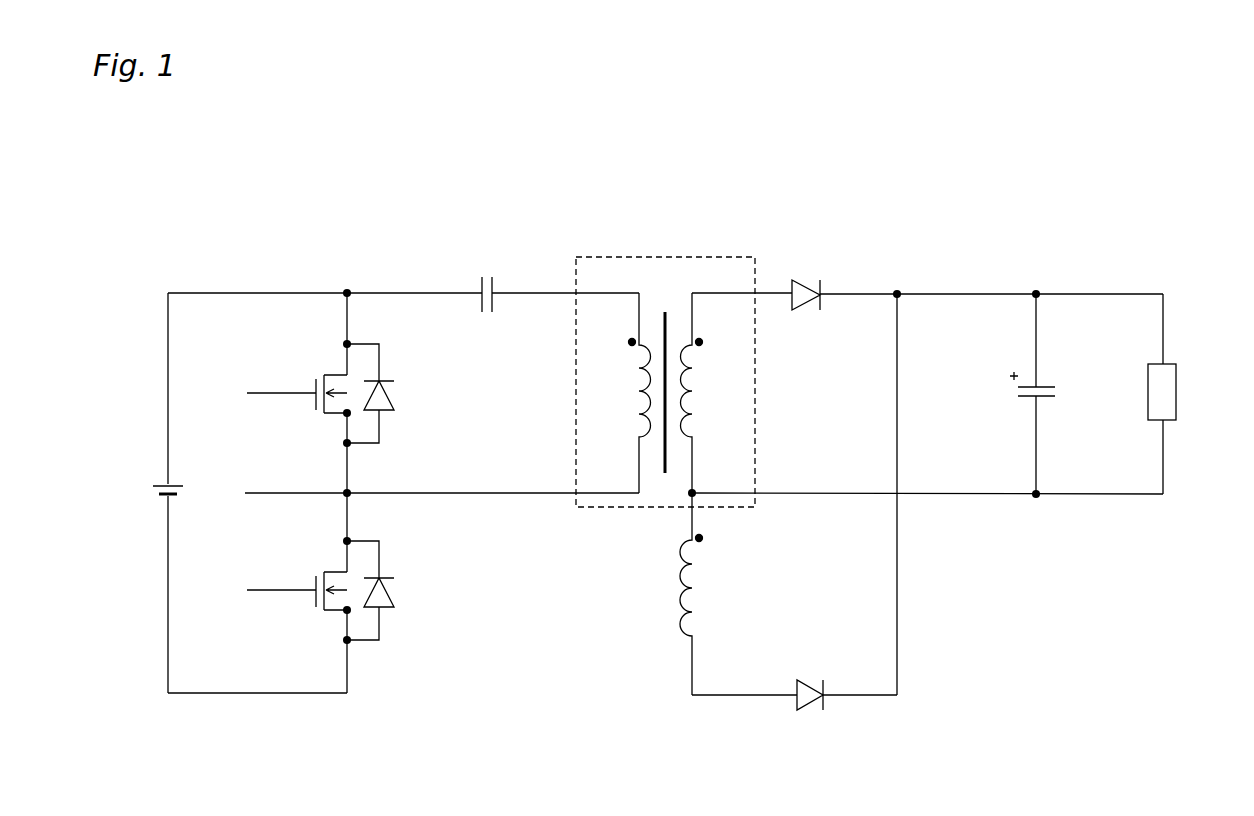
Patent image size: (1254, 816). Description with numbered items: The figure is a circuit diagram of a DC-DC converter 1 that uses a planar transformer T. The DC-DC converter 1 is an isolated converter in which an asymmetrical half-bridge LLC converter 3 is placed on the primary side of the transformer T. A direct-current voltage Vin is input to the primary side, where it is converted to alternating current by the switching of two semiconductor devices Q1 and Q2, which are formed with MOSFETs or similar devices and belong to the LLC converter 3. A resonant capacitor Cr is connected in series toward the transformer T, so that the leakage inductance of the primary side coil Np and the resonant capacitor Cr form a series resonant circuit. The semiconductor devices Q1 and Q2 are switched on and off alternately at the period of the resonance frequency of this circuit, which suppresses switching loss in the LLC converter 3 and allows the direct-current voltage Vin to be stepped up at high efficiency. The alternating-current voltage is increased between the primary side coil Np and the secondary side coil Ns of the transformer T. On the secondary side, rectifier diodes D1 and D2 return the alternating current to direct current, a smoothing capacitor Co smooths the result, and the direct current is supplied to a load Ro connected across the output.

The DC-DC converter 1 is at (421, 227).
The asymmetrical half-bridge LLC converter 3 is at (492, 517).
The direct-current voltage Vin is at (180, 493).
The semiconductor device Q1 is at (320, 590).
The semiconductor device Q2 is at (320, 393).
The resonant capacitor Cr is at (487, 280).
The transformer T is at (665, 476).
The primary side coil Np is at (625, 393).
The secondary side coil Ns is at (700, 494).
The rectifier diode D1 is at (806, 312).
The rectifier diode D2 is at (794, 520).
The smoothing capacitor Co is at (1038, 394).
The load Ro is at (1176, 394).